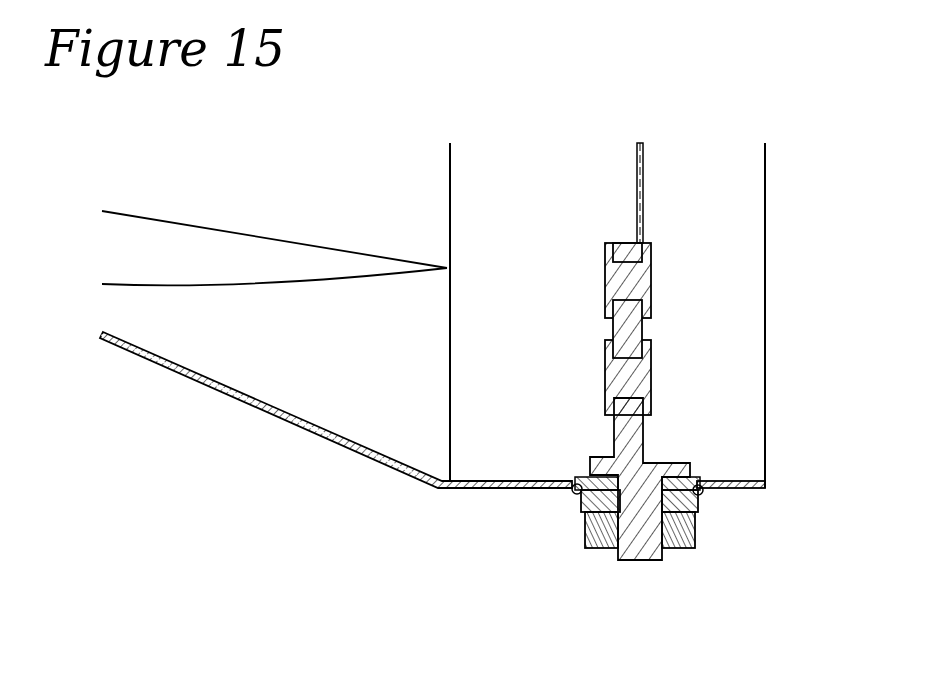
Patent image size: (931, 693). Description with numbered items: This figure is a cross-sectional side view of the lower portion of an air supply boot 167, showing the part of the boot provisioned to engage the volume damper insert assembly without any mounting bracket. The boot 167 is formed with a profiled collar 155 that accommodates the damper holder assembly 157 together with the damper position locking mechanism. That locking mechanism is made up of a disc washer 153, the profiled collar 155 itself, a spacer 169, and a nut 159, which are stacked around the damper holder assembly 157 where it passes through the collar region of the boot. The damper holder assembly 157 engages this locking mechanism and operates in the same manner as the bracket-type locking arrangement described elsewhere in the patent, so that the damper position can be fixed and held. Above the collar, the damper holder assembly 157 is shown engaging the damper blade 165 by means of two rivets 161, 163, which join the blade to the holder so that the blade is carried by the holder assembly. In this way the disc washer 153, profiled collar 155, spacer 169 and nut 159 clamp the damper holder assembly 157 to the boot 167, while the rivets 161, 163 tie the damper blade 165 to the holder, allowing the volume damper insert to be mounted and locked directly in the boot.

The disc washer 153 is at (586, 478).
The profiled collar 155 is at (568, 493).
The damper holder assembly 157 is at (634, 568).
The nut 159 is at (692, 548).
The rivet 161 is at (652, 383).
The rivet 163 is at (605, 281).
The damper blade 165 is at (636, 191).
The air supply boot 167 is at (244, 405).
The spacer 169 is at (702, 497).